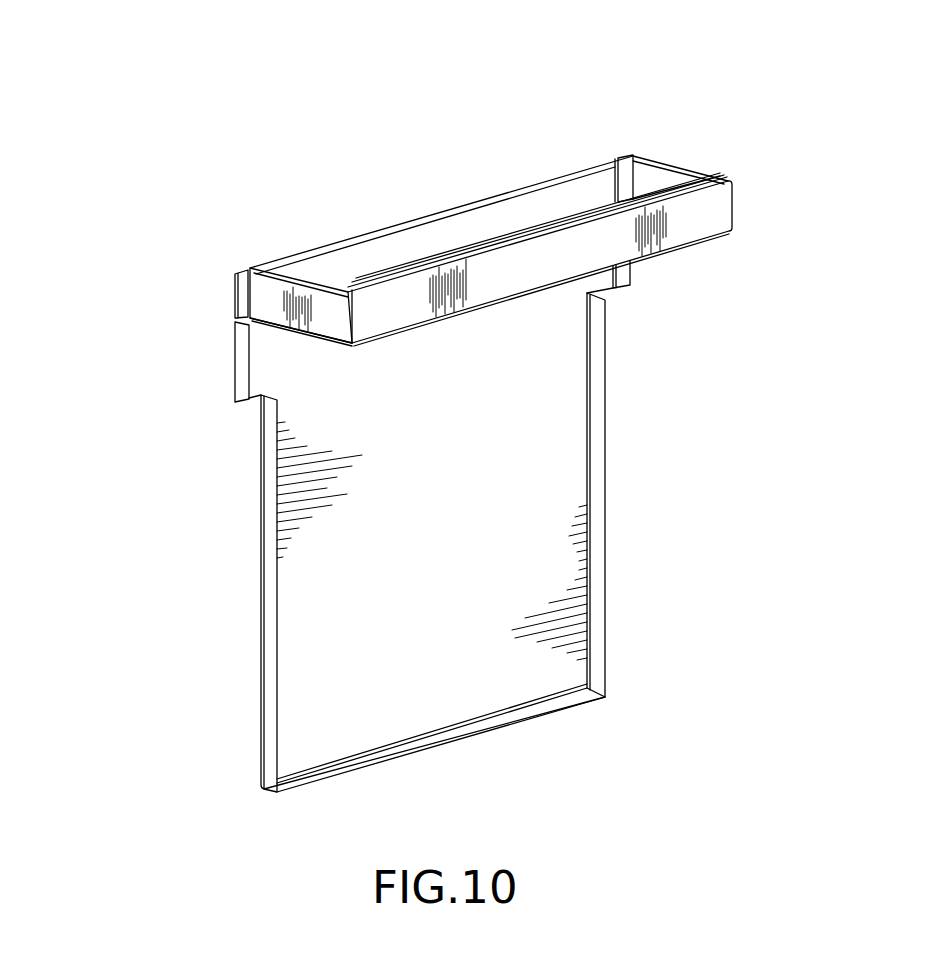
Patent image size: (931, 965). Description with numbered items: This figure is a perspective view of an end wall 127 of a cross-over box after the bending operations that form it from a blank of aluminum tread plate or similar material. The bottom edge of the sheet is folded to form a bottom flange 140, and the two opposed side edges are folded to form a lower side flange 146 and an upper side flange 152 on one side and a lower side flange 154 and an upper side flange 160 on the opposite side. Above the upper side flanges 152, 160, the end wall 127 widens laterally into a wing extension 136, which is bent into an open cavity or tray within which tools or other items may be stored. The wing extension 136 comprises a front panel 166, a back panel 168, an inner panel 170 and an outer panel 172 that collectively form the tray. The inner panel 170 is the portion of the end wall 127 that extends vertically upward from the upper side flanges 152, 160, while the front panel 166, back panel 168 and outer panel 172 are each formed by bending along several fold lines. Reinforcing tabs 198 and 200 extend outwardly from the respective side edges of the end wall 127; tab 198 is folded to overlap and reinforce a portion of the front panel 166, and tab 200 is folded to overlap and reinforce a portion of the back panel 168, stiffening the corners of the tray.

The end wall 127 is at (183, 737).
The wing extension 136 is at (600, 138).
The bottom flange 140 is at (512, 723).
The lower side flange 146 is at (260, 640).
The upper side flange 152 is at (237, 360).
The lower side flange 154 is at (605, 458).
The upper side flange 160 is at (630, 283).
The front panel 166 is at (702, 171).
The back panel 168 is at (262, 288).
The inner panel 170 is at (448, 211).
The outer panel 172 is at (718, 217).
The reinforcing tab 198 is at (628, 183).
The reinforcing tab 200 is at (237, 300).